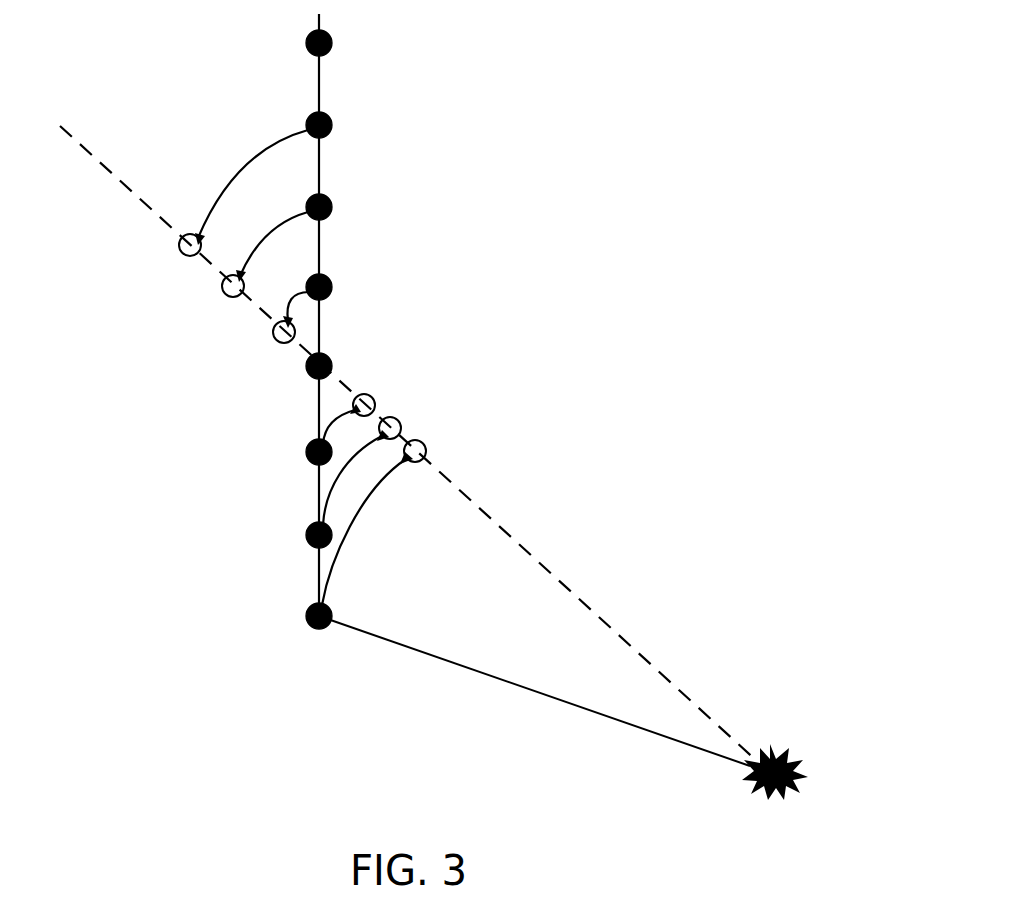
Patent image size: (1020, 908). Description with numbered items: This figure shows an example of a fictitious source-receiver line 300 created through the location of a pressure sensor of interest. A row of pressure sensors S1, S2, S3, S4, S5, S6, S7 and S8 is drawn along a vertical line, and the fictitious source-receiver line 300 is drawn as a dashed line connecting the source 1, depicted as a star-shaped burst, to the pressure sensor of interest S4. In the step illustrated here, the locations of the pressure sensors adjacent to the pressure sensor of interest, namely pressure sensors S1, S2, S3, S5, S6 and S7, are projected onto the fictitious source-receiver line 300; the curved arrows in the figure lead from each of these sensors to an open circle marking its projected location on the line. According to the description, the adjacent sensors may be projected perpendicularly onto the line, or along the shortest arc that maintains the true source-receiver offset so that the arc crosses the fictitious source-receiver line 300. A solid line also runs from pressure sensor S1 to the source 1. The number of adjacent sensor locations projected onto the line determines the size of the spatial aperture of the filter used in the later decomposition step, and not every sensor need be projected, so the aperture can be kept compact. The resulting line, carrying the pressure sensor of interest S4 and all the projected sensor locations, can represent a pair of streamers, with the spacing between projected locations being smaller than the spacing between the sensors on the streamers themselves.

The pressure sensor S1 is at (306, 617).
The pressure sensor S2 is at (306, 536).
The pressure sensor S3 is at (306, 453).
The pressure sensor of interest S4 is at (306, 368).
The pressure sensor S5 is at (333, 287).
The pressure sensor S6 is at (333, 207).
The pressure sensor S7 is at (333, 125).
The pressure sensor S8 is at (333, 43).
The fictitious source-receiver line 300 is at (500, 524).
The source 1 is at (800, 764).